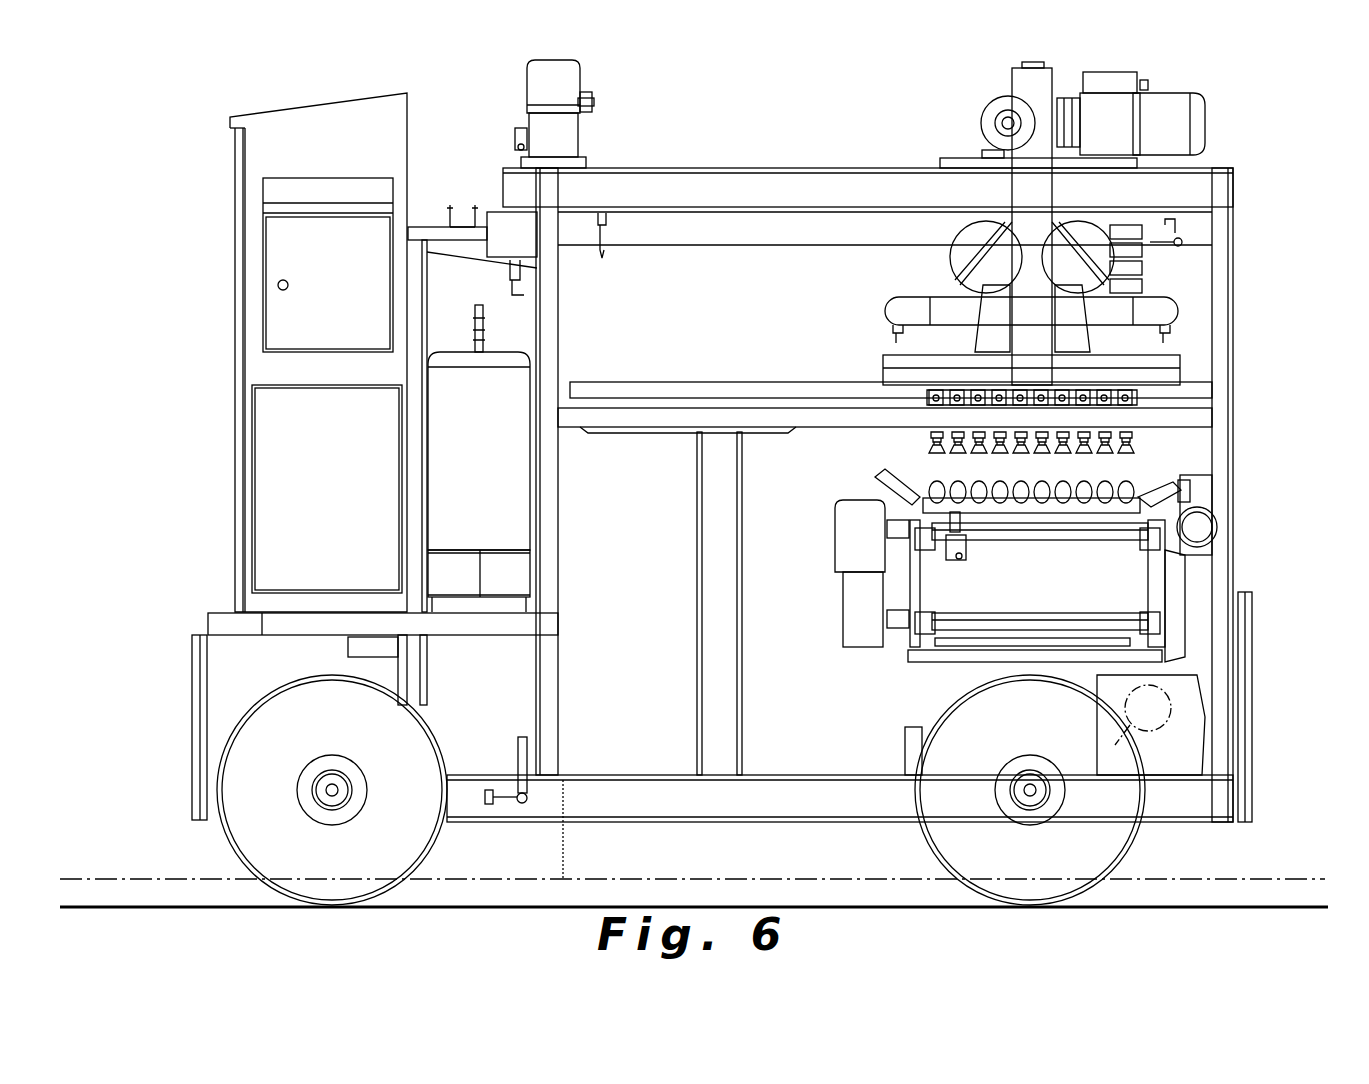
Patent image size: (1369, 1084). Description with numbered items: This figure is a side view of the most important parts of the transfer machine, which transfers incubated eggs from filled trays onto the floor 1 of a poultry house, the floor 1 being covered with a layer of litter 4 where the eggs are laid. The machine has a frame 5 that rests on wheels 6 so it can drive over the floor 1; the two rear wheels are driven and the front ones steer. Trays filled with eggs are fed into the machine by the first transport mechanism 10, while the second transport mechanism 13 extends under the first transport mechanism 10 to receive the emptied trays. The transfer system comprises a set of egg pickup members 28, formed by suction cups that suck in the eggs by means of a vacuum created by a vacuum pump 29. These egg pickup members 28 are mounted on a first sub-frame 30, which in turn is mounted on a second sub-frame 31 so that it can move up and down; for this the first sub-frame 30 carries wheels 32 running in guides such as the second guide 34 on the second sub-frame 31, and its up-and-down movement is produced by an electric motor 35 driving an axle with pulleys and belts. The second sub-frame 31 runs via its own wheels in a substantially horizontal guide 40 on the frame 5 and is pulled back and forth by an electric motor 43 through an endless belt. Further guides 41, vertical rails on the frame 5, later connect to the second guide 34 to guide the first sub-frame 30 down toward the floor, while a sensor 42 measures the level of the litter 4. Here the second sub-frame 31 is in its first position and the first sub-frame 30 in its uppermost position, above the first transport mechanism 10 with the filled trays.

The floor 1 is at (1282, 903).
The litter 4 is at (1245, 890).
The frame 5 is at (1225, 297).
The wheels 6 is at (1080, 833).
The first transport mechanism 10 is at (1242, 528).
The second transport mechanism 13 is at (1100, 595).
The egg pickup members 28 is at (1133, 443).
The vacuum pump 29 is at (1080, 278).
The first sub-frame 30 is at (1178, 308).
The second sub-frame 31 is at (1004, 143).
The wheels 32 is at (1006, 88).
The second guide 34 is at (1028, 117).
The electric motor 35 is at (1163, 128).
The guide 40 is at (673, 198).
The further guides 41 is at (717, 712).
The sensor 42 is at (568, 762).
The electric motor 43 is at (565, 68).